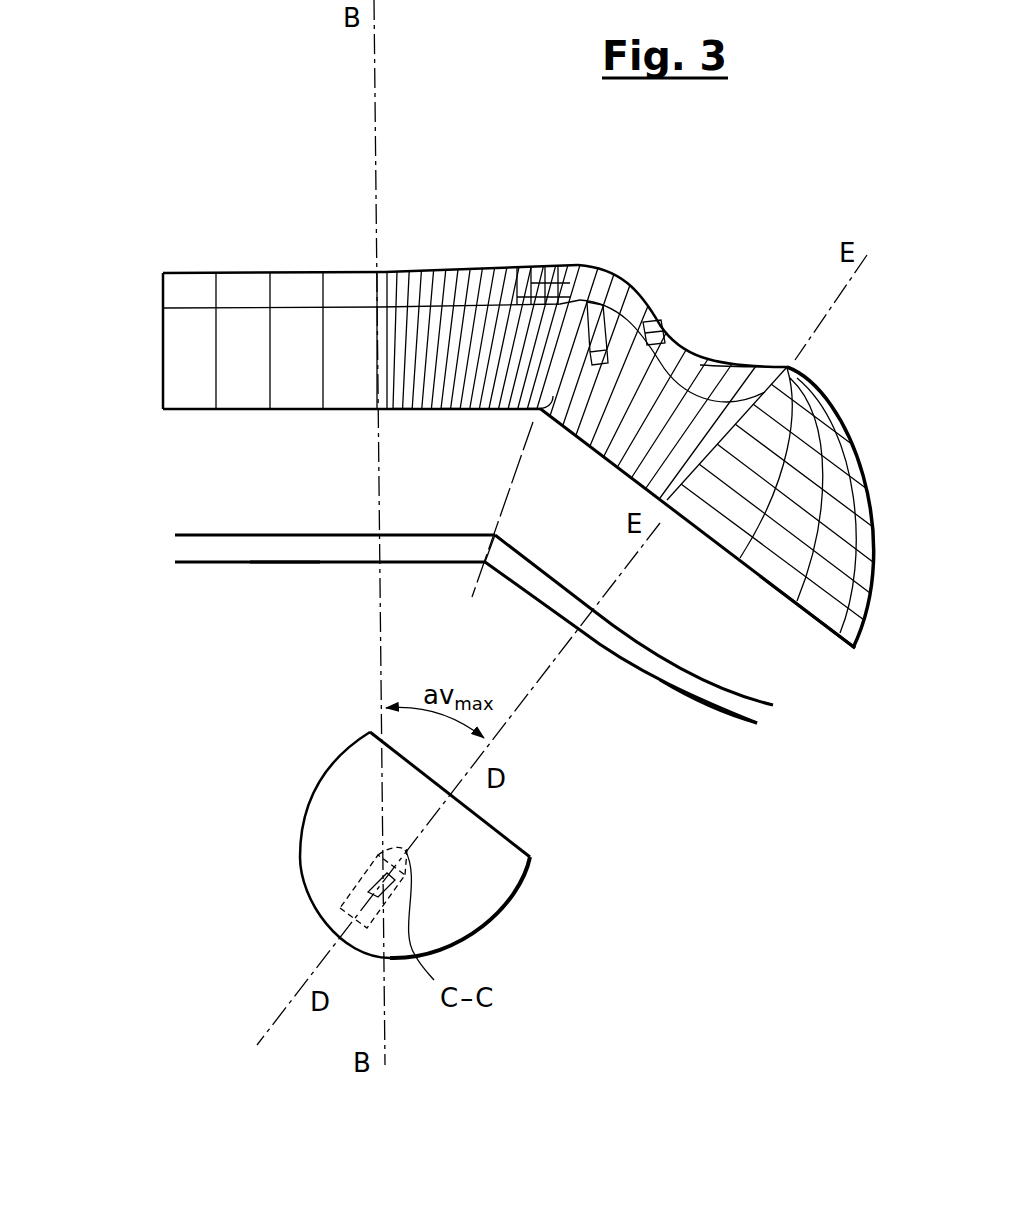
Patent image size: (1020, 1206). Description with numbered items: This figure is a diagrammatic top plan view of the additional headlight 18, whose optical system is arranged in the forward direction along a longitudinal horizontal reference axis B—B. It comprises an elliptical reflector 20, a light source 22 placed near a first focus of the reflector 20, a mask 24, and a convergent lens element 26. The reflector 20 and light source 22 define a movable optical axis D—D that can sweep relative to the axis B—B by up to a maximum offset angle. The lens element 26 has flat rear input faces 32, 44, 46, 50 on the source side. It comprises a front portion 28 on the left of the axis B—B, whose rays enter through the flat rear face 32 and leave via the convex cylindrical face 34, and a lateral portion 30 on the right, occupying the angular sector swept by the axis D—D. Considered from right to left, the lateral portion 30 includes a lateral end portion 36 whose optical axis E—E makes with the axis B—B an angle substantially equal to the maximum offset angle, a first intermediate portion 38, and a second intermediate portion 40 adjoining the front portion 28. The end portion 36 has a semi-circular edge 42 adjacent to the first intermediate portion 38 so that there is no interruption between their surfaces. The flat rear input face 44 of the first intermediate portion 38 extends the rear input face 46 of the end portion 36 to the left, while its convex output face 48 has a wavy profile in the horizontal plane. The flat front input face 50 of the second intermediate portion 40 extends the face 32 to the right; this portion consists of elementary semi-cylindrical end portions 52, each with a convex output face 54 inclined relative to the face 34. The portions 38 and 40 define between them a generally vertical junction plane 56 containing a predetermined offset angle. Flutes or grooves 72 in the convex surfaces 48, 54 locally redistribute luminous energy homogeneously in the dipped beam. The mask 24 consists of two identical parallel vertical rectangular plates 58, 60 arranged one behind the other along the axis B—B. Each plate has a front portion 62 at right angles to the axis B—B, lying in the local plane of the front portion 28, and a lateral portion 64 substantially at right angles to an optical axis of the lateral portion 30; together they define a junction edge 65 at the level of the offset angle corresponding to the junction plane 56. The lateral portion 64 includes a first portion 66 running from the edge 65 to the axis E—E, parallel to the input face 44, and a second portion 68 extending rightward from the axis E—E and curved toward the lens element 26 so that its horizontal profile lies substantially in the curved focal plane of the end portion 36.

The additional headlight 18 is at (104, 346).
The elliptical reflector 20 is at (340, 761).
The light source 22 is at (360, 868).
The mask 24 is at (145, 554).
The convergent lens element 26 is at (183, 203).
The front portion 28 is at (296, 268).
The lateral portion 30 is at (749, 253).
The flat rear face 32 is at (228, 410).
The convex cylindrical face 34 is at (190, 272).
The lateral end portion 36 is at (858, 434).
The first intermediate portion 38 is at (604, 264).
The second intermediate portion 40 is at (489, 262).
The semi-circular edge 42 is at (790, 385).
The rear input face 44 is at (602, 482).
The rear input face 46 is at (782, 615).
The convex output face 48 is at (714, 365).
The front input face 50 is at (448, 412).
The elementary semi-cylindrical end portions 52 is at (415, 408).
The convex output face 54 is at (439, 265).
The junction plane 56 is at (542, 414).
The rectangular plate 58 is at (184, 566).
The rectangular plate 60 is at (177, 530).
The front portion 62 is at (282, 567).
The lateral portion 64 is at (510, 607).
The junction edge 65 is at (480, 565).
The first portion 66 is at (550, 610).
The second portion 68 is at (687, 700).
The flutes or grooves 72 is at (548, 264).